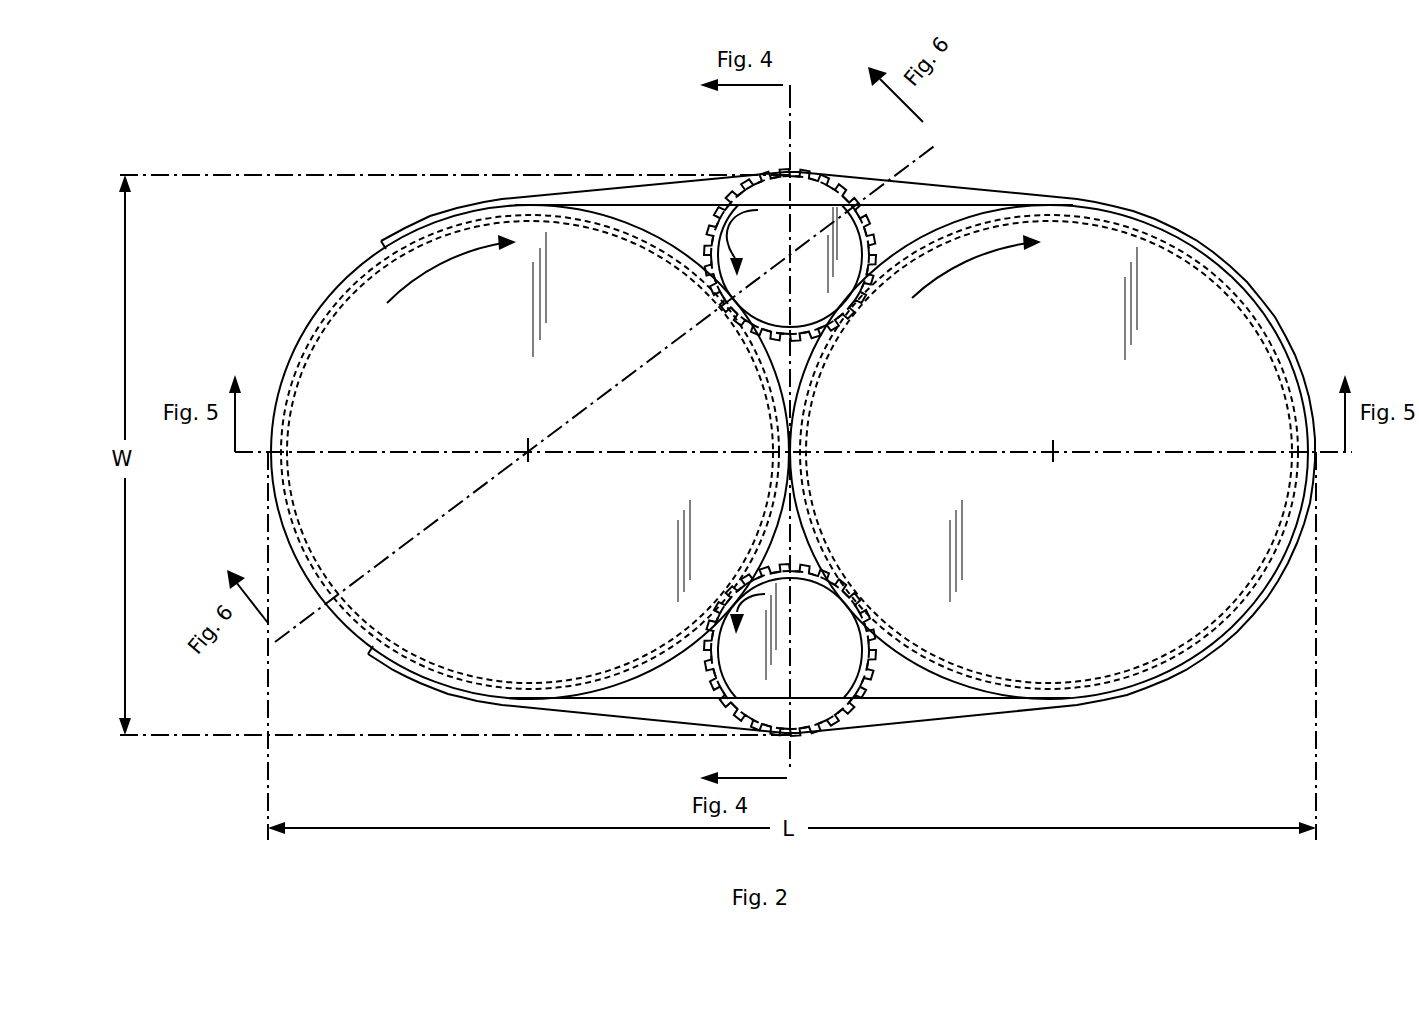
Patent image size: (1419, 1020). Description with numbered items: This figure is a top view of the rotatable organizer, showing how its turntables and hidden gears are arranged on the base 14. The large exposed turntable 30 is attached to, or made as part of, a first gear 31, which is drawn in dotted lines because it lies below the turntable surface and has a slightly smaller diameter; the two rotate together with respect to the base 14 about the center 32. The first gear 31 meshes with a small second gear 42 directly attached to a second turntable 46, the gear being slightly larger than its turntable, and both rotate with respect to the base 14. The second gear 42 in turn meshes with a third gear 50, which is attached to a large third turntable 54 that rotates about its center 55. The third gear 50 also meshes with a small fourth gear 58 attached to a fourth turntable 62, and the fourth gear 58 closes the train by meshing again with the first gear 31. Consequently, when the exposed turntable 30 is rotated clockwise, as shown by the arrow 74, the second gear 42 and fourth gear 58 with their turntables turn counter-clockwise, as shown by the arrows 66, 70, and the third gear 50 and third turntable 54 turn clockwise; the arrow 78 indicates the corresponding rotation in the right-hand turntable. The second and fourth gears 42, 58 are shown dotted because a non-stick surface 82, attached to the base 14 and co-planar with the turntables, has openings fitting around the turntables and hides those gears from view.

The base 14 is at (1003, 207).
The exposed turntable 30 is at (340, 340).
The first gear 31 is at (350, 283).
The center of the exposed turntable 32 is at (528, 455).
The second gear 42 is at (850, 206).
The second turntable 46 is at (813, 195).
The third gear 50 is at (1163, 233).
The third turntable 54 is at (1195, 315).
The center of the third turntable 55 is at (1056, 447).
The fourth gear 58 is at (712, 672).
The fourth turntable 62 is at (740, 655).
The arrow 66 is at (447, 268).
The arrow 70 is at (758, 210).
The arrow 74 is at (765, 594).
The second rotor rotation direction 78 is at (948, 267).
The non-stick surface 82 is at (918, 672).